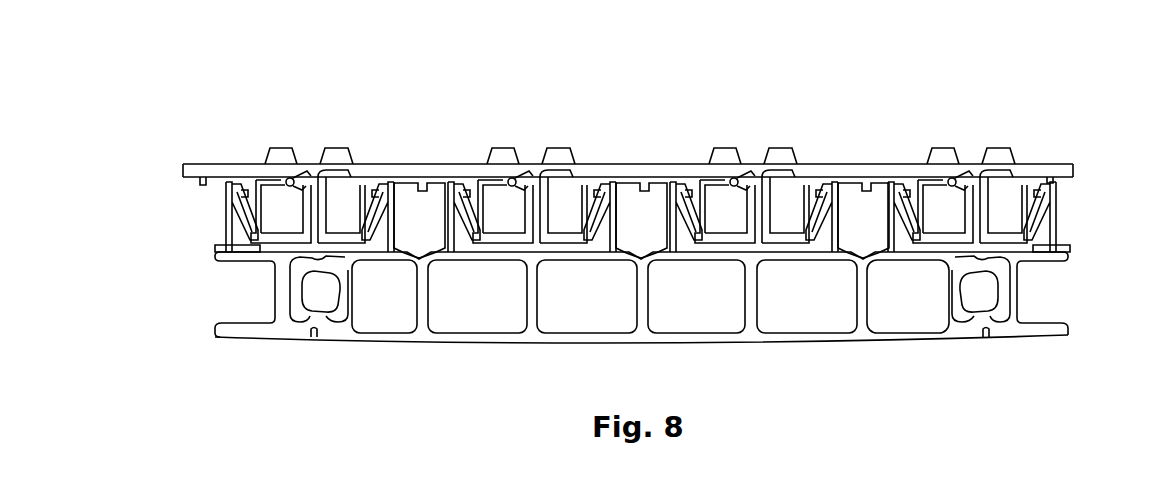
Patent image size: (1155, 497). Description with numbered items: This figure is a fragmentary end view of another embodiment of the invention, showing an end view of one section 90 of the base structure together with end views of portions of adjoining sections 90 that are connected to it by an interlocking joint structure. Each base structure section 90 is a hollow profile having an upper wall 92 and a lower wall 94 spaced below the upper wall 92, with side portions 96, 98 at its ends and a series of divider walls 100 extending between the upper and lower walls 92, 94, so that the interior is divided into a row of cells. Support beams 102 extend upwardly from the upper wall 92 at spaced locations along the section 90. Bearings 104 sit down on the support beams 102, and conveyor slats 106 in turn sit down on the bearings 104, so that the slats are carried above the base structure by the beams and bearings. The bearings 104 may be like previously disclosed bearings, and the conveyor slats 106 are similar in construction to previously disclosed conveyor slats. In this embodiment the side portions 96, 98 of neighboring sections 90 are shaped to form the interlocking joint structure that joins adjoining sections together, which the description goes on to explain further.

The section 90 is at (256, 343).
The upper wall 92 is at (530, 255).
The lower wall 94 is at (672, 340).
The side portion 96 is at (312, 328).
The side portion 98 is at (295, 268).
The divider wall 100 is at (526, 303).
The support beam 102 is at (226, 205).
The bearing 104 is at (233, 182).
The conveyor slat 106 is at (200, 163).